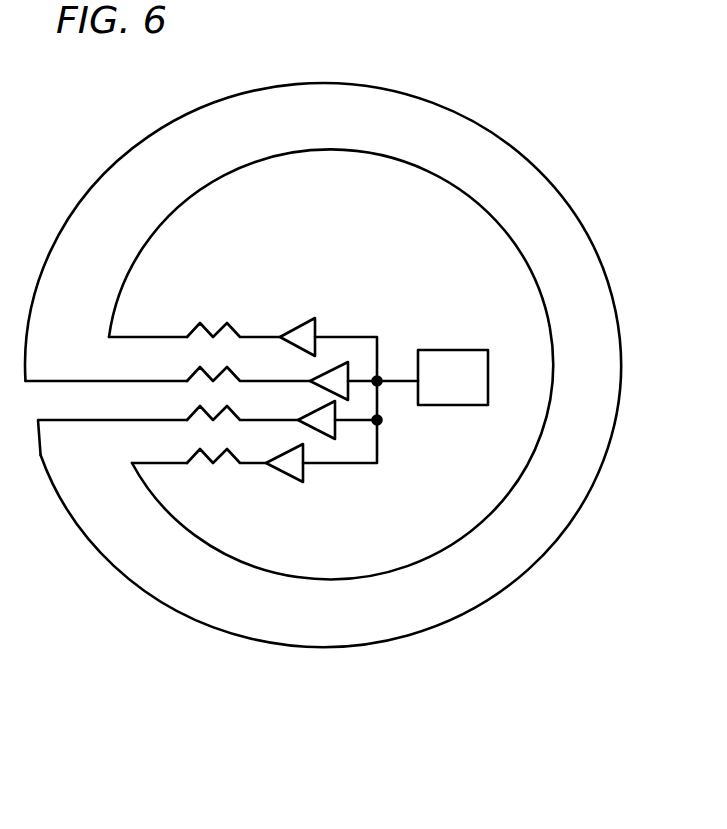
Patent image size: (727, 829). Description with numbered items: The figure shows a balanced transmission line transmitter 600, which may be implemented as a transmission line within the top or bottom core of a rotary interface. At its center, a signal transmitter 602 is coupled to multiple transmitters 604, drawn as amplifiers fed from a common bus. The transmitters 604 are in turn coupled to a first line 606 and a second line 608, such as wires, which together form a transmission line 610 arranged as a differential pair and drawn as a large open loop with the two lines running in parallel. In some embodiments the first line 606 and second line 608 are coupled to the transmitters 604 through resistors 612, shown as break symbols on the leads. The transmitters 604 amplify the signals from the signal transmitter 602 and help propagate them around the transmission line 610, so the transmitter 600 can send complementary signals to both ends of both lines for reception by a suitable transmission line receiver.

The balanced transmission line transmitter 600 is at (506, 79).
The signal transmitter 602 is at (470, 391).
The transmitters 604 is at (320, 327).
The first line 606 is at (328, 582).
The second line 608 is at (313, 650).
The transmission line 610 is at (150, 495).
The resistors 612 is at (215, 370).